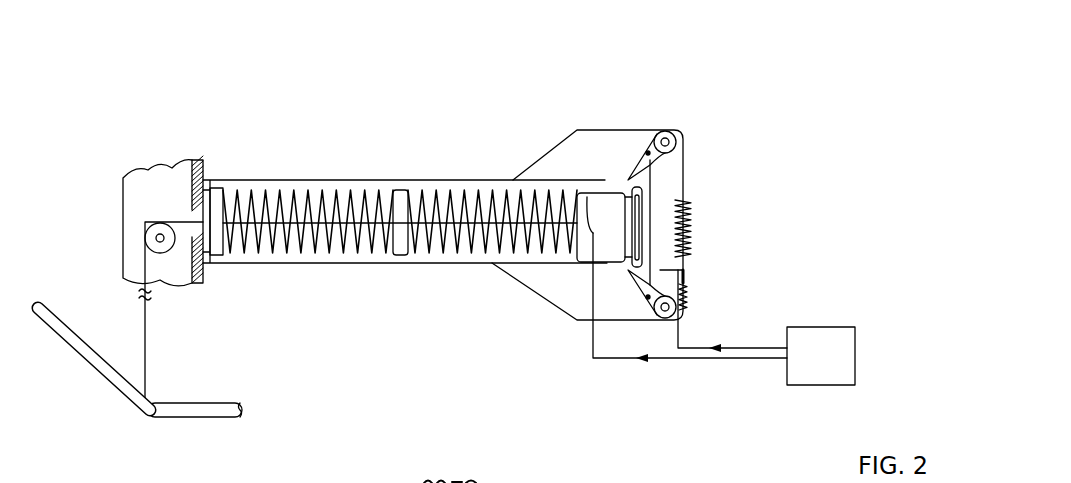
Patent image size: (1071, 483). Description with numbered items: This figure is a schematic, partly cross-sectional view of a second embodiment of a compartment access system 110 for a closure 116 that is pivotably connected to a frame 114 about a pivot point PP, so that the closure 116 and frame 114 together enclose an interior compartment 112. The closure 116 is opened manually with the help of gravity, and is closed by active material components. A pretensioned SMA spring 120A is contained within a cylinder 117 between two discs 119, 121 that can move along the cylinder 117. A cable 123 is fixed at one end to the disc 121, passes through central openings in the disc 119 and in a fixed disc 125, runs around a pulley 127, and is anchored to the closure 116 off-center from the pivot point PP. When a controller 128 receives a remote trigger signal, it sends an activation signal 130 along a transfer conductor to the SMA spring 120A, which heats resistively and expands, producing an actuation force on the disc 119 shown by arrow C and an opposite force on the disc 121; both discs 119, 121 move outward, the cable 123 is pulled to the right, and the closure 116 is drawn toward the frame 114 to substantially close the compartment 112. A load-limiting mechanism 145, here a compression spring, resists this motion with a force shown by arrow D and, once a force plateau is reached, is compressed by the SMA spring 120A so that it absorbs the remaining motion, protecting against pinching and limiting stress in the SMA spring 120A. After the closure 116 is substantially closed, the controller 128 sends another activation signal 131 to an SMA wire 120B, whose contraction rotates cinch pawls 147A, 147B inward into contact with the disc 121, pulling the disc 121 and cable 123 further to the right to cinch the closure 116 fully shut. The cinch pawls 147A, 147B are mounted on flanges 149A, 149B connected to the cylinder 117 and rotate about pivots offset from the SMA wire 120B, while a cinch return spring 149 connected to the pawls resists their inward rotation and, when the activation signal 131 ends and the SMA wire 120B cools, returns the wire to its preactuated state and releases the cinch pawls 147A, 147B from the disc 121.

The compartment access system 110 is at (786, 46).
The interior compartment 112 is at (262, 338).
The frame 114 is at (123, 253).
The closure 116 is at (78, 369).
The cylinder 117 is at (443, 180).
The disc 119 is at (398, 192).
The SMA spring 120A is at (497, 243).
The SMA wire 120B is at (650, 190).
The disc 121 is at (590, 190).
The cable 123 is at (475, 237).
The fixed disc 125 is at (215, 190).
The pulley 127 is at (145, 222).
The controller 128 is at (841, 367).
The activation signal 130 is at (695, 362).
The activation signal 131 is at (743, 348).
The load-limiting mechanism 145 is at (325, 200).
The cinch pawl 147A is at (666, 131).
The cinch pawl 147B is at (633, 300).
The cinch return spring 149 is at (693, 238).
The flange 149A is at (558, 143).
The flange 149B is at (578, 318).
The pivot point PP is at (146, 408).
The arrow D is at (327, 168).
The arrow C is at (457, 168).